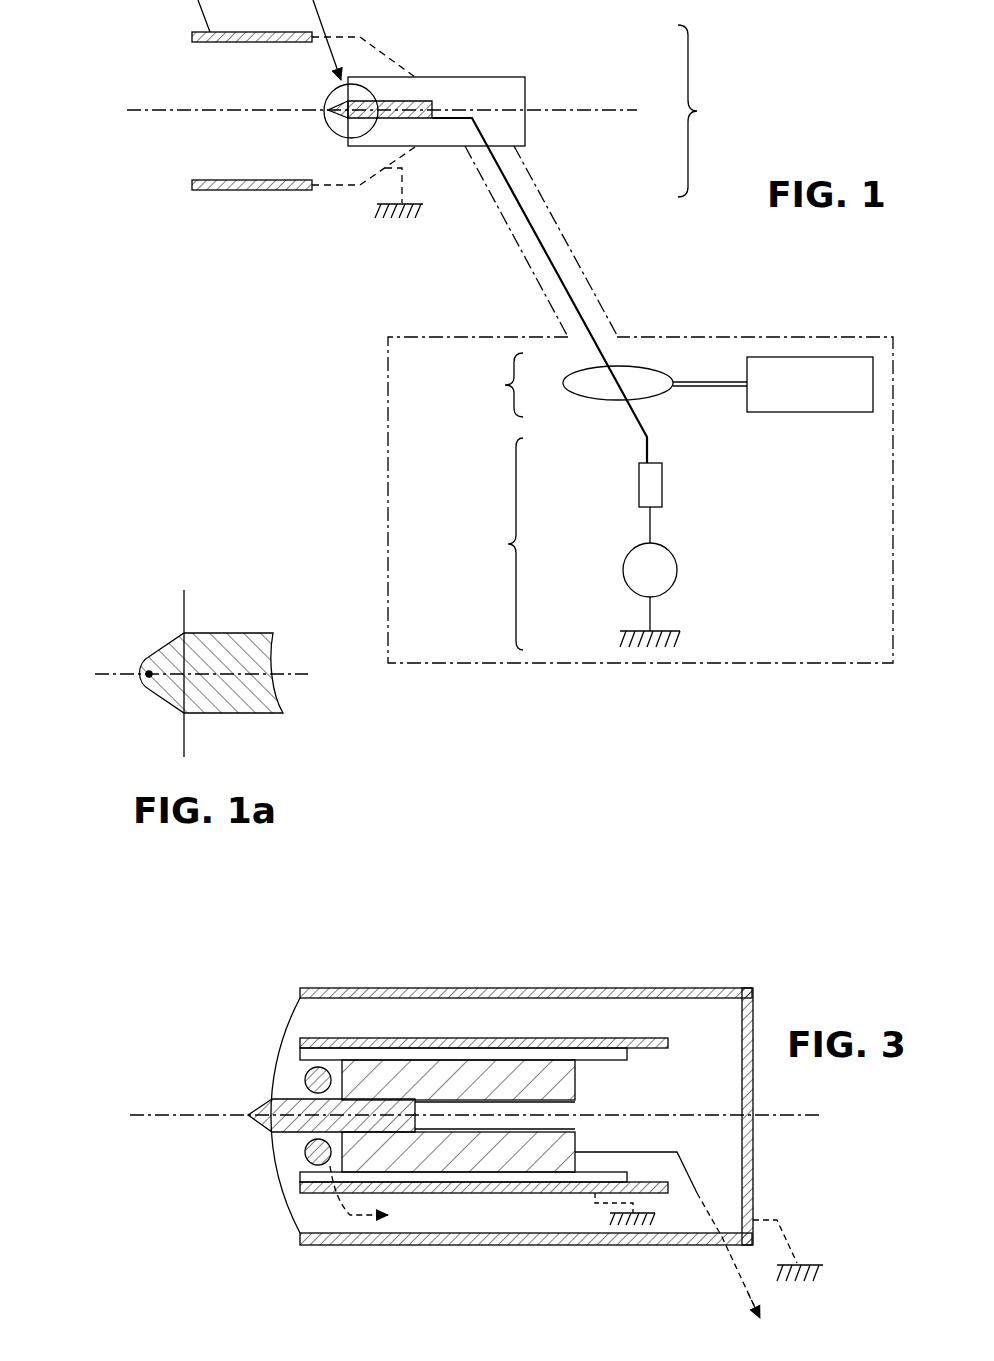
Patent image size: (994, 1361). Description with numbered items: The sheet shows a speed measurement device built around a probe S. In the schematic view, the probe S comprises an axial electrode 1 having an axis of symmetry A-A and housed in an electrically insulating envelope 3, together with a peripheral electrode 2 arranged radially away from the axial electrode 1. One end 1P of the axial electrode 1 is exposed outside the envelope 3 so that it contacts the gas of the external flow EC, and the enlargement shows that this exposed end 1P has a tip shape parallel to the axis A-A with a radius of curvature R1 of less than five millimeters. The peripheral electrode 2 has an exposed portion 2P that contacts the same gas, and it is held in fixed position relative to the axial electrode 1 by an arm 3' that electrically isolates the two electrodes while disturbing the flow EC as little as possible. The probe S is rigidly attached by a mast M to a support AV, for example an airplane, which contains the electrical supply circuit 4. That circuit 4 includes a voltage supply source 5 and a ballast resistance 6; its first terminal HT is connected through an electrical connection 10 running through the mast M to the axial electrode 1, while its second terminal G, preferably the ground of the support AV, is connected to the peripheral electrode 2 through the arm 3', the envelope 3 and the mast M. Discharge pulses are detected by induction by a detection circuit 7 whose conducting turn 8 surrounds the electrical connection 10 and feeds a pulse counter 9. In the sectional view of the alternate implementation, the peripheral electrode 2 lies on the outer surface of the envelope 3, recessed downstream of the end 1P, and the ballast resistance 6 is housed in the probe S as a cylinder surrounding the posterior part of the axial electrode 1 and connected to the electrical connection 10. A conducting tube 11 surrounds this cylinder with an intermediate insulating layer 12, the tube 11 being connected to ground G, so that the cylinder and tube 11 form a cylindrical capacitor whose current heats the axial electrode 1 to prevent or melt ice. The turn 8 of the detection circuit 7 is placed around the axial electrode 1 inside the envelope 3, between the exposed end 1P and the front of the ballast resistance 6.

In FIG. 1, the axial electrode 1 is at (423, 100).
In FIG. 1a, the axial electrode 1 is at (241, 704).
In FIG. 3, the axial electrode 1 is at (270, 1134).
In FIG. 1, the exposed end of the axial electrode 1P is at (320, 115).
In FIG. 1a, the exposed end of the axial electrode 1P is at (140, 687).
In FIG. 3, the exposed end of the axial electrode 1P is at (245, 1118).
In FIG. 3, the peripheral electrode 2 is at (596, 988).
In FIG. 1, the exposed portion of the peripheral electrode 2P is at (282, 47).
In FIG. 3, the exposed portion of the peripheral electrode 2P is at (326, 985).
In FIG. 1, the envelope 3 is at (440, 79).
In FIG. 1a, the envelope 3 is at (203, 673).
In FIG. 3, the envelope 3 is at (710, 1029).
In FIG. 1, the arm 3' is at (363, 101).
In FIG. 1, the electrical supply circuit 4 is at (504, 544).
In FIG. 1, the voltage supply source 5 is at (677, 563).
In FIG. 3, the voltage supply source 5 is at (760, 1320).
In FIG. 1, the ballast resistance 6 is at (662, 487).
In FIG. 3, the ballast resistance 6 is at (575, 1140).
In FIG. 1, the detection circuit 7 is at (504, 385).
In FIG. 1, the conducting turn 8 is at (663, 397).
In FIG. 3, the conducting turn 8 is at (307, 1073).
In FIG. 1, the pulse counter 9 is at (838, 412).
In FIG. 3, the pulse counter 9 is at (372, 1197).
In FIG. 1, the electrical connection 10 is at (593, 342).
In FIG. 3, the electrical connection 10 is at (697, 1187).
In FIG. 3, the tube 11 is at (648, 1037).
In FIG. 3, the layer of electrically insulating material 12 is at (627, 1057).
In FIG. 1, the axis of symmetry A is at (147, 113).
In FIG. 1a, the axis of symmetry A is at (107, 677).
In FIG. 3, the axis of symmetry A is at (148, 1118).
In FIG. 1, the probe S is at (697, 111).
In FIG. 3, the probe S is at (322, 1253).
In FIG. 1, the flow of external gas EC is at (178, 72).
In FIG. 3, the flow of external gas EC is at (198, 1090).
In FIG. 1, the ground terminal G is at (635, 631).
In FIG. 3, the ground terminal G is at (714, 1241).
In FIG. 1, the mast M is at (580, 263).
In FIG. 1, the support AV is at (838, 335).
In FIG. 1, the high voltage terminal HT is at (650, 523).
In FIG. 1a, the radius of curvature R1 is at (133, 660).